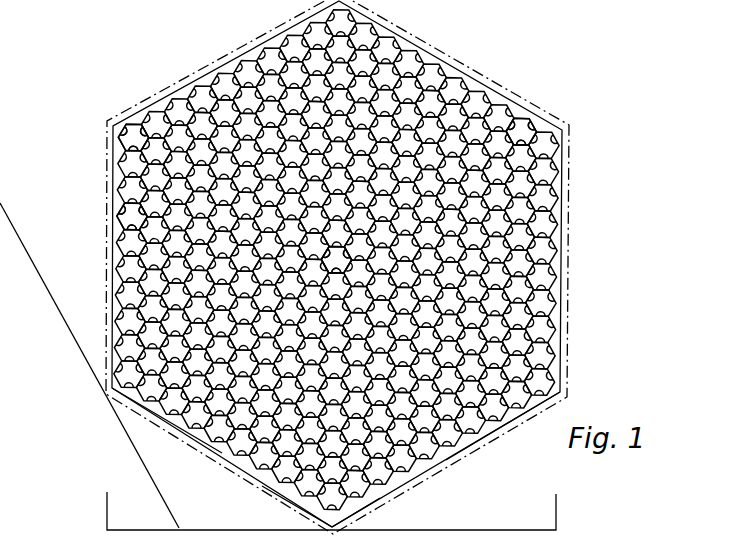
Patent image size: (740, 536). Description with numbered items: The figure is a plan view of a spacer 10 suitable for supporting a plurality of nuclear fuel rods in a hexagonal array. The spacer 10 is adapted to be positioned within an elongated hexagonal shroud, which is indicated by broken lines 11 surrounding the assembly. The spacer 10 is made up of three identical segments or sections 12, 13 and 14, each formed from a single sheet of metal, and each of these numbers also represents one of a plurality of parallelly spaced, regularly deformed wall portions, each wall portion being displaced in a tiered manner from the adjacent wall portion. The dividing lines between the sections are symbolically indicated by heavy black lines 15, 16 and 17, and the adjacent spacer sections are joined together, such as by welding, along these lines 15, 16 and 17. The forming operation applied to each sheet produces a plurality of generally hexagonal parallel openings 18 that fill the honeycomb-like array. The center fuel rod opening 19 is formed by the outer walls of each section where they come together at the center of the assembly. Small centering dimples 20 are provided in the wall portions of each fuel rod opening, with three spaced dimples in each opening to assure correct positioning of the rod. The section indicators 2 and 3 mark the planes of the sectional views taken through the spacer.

The spacer 10 is at (573, 122).
The hexagonal shroud 11 is at (568, 188).
The spacer section 12 is at (473, 437).
The spacer section 13 is at (222, 450).
The spacer section 14 is at (263, 51).
The dividing line 15 is at (340, 509).
The dividing line 16 is at (518, 138).
The dividing line 17 is at (120, 133).
The hexagonal opening 18 is at (130, 217).
The center fuel rod opening 19 is at (345, 268).
The centering dimple 20 is at (302, 504).
The section line 2- 2 is at (331, 498).
The section line 3- 3 is at (0, 193).